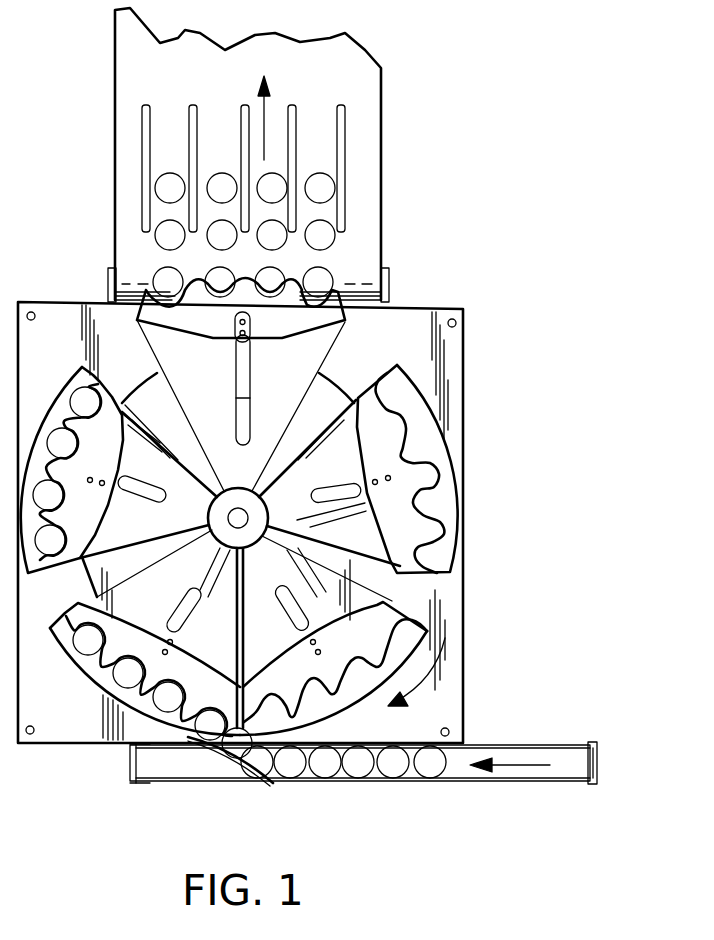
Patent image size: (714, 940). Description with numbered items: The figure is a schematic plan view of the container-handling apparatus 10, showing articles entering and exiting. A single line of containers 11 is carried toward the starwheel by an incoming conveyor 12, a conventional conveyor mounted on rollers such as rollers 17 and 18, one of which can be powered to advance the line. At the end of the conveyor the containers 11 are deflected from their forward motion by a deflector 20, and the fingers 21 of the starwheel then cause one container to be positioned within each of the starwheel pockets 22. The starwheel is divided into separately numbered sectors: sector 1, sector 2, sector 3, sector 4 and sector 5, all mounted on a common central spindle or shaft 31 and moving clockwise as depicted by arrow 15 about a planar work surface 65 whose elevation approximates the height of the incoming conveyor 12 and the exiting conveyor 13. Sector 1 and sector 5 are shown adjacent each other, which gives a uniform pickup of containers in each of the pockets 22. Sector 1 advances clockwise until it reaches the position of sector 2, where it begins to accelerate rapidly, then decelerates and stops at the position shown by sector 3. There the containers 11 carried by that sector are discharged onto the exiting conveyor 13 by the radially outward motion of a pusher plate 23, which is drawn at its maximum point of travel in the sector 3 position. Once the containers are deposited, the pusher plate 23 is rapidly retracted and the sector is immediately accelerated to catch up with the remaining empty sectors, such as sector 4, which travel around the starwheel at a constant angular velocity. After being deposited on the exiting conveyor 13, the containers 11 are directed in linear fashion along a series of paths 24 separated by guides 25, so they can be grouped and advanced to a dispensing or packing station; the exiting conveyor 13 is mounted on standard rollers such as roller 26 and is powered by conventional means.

The apparatus 10 is at (414, 185).
The exiting conveyor 13 is at (118, 175).
The paths 24 is at (308, 112).
The guides 25 is at (345, 137).
The roller 26 is at (381, 270).
The pusher plate 23 is at (221, 329).
The starwheel sector 3 is at (278, 422).
The starwheel sector 2 is at (133, 534).
The starwheel sector 4 is at (363, 539).
The starwheel sector 1 is at (207, 574).
The starwheel sector 5 is at (269, 626).
The central spindle or shaft 31 is at (238, 518).
The planar work surface 65 is at (465, 430).
The fingers 21 is at (115, 655).
The starwheel pockets 22 is at (347, 667).
The arrow 15 is at (427, 668).
The incoming conveyor 12 is at (530, 743).
The containers 11 is at (434, 768).
The conveyor roller 17 is at (590, 784).
The conveyor roller 18 is at (133, 786).
The deflector 20 is at (228, 766).